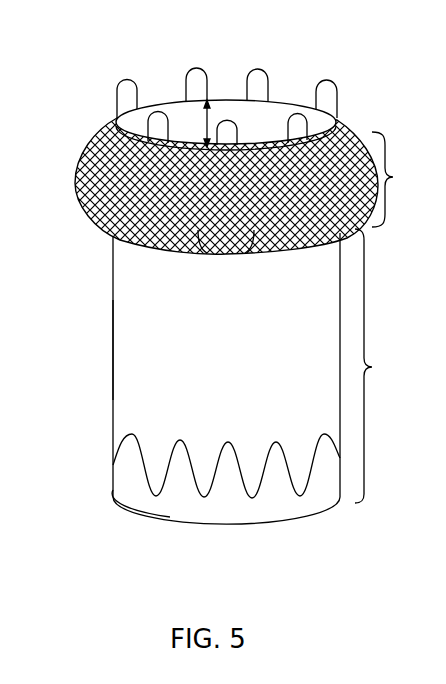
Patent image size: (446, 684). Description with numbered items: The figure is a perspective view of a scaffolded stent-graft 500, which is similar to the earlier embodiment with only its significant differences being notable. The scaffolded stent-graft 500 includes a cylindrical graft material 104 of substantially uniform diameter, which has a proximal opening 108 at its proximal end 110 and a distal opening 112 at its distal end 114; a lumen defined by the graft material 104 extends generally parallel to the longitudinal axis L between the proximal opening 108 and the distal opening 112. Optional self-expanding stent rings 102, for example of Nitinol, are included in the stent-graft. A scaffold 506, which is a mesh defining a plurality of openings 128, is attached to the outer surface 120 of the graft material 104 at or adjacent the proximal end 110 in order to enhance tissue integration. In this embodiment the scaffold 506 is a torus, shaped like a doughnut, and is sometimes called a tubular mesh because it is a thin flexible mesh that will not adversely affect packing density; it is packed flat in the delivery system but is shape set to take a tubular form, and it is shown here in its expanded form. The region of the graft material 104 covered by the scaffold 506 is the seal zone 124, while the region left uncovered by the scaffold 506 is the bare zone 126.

The scaffolded stent-graft 500 is at (227, 315).
The stent rings 102 is at (338, 98).
The graft material 104 is at (247, 363).
The proximal opening 108 is at (220, 63).
The proximal end 110 is at (176, 102).
The distal opening 112 is at (148, 532).
The distal end 114 is at (232, 527).
The outer surface 120 is at (113, 352).
The seal zone 124 is at (401, 179).
The bare zone 126 is at (382, 366).
The openings 128 is at (248, 236).
The scaffold 506 is at (88, 214).
The longitudinal axis L is at (209, 120).